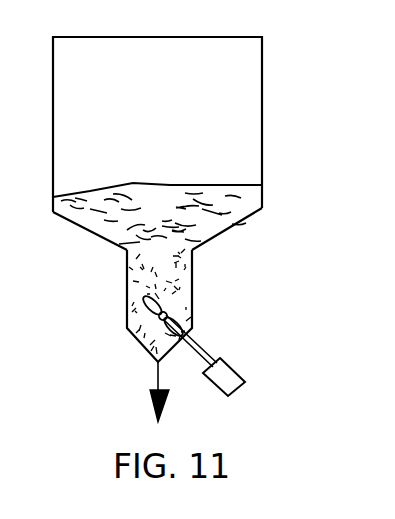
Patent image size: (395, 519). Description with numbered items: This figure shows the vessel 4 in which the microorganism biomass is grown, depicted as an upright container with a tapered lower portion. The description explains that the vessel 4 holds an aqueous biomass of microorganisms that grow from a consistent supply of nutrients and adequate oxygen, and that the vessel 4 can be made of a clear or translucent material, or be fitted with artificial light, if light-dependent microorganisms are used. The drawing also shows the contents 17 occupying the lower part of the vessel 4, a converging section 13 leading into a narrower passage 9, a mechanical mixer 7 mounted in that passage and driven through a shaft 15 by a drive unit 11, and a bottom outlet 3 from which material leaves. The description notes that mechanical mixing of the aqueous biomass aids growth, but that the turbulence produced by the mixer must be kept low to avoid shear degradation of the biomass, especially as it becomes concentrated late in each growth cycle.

The vessel 4 is at (262, 108).
The fluid 17 is at (262, 192).
The hopper 13 is at (165, 237).
The neck 9 is at (127, 306).
The propeller 7 is at (182, 303).
The shaft 15 is at (192, 325).
The motor 11 is at (219, 390).
The outlet 3 is at (157, 377).